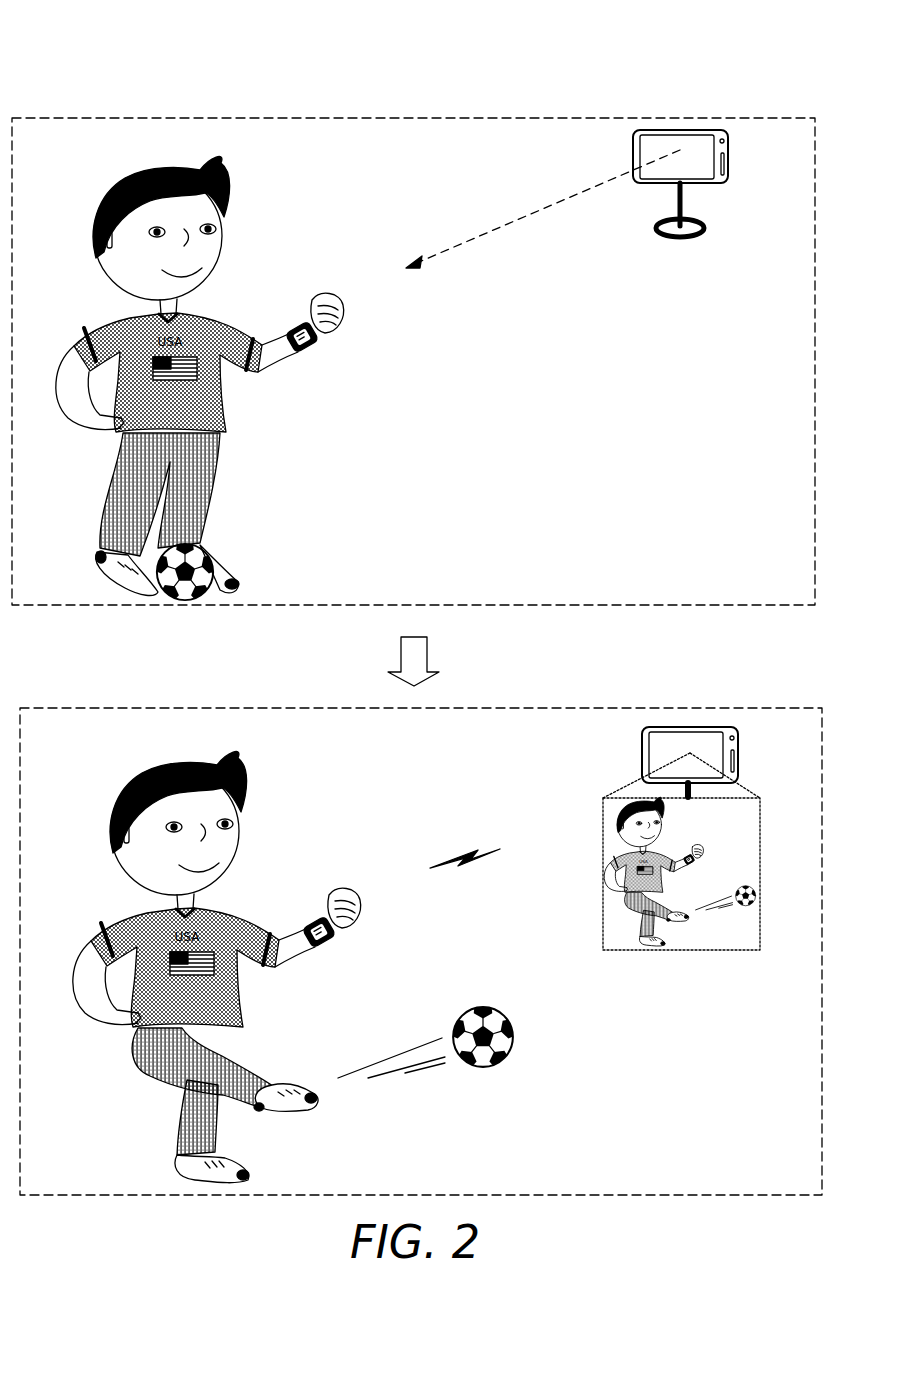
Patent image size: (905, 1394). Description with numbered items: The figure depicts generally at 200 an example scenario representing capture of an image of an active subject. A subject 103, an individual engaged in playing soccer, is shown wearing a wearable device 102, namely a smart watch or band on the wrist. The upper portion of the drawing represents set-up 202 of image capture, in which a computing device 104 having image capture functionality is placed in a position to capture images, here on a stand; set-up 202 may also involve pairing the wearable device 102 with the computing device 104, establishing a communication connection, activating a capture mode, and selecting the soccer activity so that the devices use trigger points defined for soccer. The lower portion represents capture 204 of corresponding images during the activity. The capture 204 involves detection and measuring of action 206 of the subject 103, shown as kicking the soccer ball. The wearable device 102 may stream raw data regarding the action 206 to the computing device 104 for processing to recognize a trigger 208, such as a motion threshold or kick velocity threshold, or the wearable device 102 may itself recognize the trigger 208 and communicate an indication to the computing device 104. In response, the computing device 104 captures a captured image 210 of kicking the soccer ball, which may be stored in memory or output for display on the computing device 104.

The example scenario 200 is at (143, 85).
The set-up 202 is at (413, 361).
The capture 204 is at (421, 951).
The action 206 is at (428, 1068).
The trigger 208 is at (470, 886).
The captured image 210 is at (681, 879).
The wearable device 102 is at (329, 649).
The subject 103 is at (197, 670).
The computing device 104 is at (599, 463).